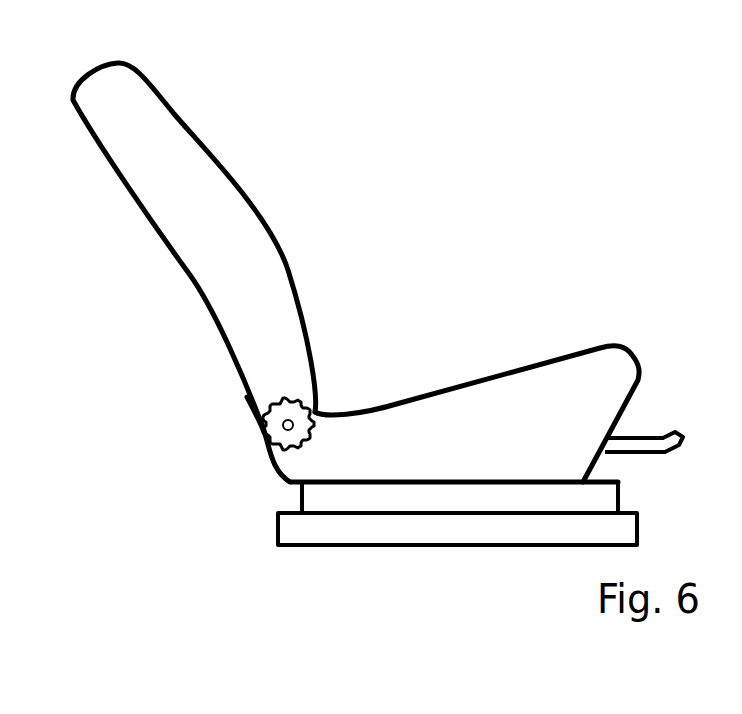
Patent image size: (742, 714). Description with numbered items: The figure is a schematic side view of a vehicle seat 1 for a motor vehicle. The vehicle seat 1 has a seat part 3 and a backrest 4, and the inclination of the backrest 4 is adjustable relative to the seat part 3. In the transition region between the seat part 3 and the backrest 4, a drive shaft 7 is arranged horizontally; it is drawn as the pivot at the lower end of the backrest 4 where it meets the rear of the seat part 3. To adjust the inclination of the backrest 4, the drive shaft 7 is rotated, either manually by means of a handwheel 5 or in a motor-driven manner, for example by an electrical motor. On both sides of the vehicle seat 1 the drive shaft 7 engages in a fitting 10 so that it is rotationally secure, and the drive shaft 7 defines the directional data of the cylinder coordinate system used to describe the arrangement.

The vehicle seat 1 is at (378, 304).
The seat part 3 is at (483, 395).
The backrest 4 is at (175, 168).
The handwheel 5 is at (317, 410).
The drive shaft 7 is at (282, 431).
The fitting 10 is at (255, 432).